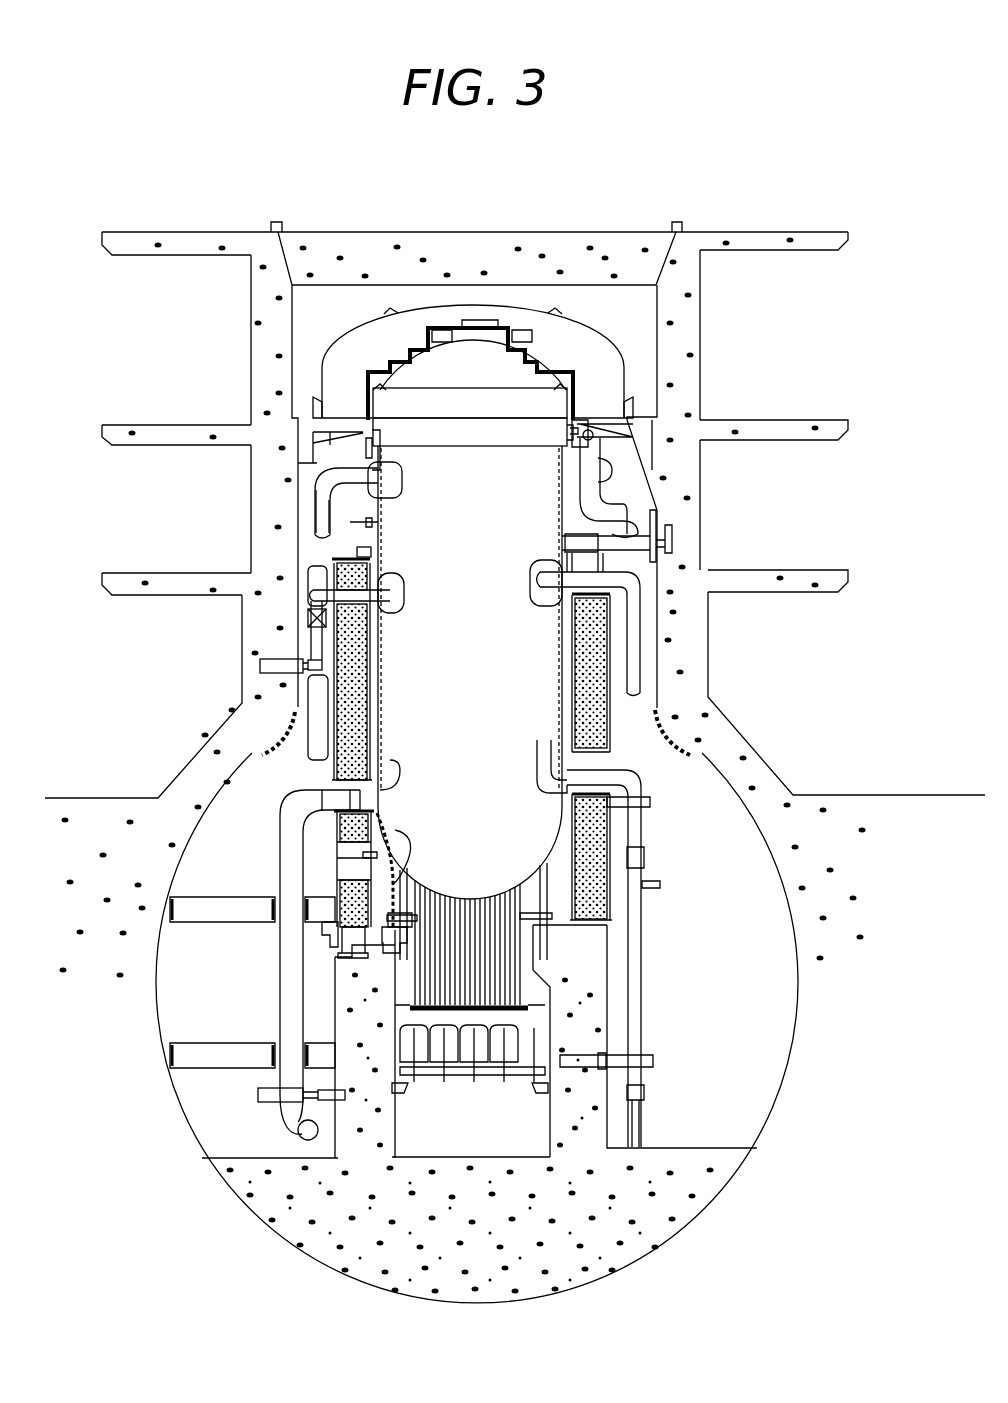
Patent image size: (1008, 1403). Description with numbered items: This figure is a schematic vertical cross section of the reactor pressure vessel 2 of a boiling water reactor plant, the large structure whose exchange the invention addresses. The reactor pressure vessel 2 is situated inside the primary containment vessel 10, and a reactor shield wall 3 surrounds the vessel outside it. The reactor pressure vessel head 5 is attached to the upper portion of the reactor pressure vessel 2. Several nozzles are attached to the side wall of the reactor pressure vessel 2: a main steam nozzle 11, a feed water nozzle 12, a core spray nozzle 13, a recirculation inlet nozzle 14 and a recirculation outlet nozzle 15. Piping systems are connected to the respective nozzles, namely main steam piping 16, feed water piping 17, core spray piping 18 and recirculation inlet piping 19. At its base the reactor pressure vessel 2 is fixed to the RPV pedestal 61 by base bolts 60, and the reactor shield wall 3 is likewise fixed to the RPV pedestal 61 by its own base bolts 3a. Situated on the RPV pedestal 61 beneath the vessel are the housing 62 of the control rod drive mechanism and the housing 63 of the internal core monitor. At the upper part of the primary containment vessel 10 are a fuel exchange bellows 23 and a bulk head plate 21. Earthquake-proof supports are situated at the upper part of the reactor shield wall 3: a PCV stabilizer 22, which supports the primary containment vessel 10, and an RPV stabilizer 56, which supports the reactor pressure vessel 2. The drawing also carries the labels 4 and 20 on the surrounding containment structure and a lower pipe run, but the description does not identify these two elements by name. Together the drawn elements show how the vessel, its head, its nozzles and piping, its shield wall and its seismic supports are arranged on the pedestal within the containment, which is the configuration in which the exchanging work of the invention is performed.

The reactor pressure vessel 2 is at (565, 642).
The reactor shield wall 3 is at (610, 662).
The base bolts 3a is at (337, 933).
The reactor cavity shield dome 4 is at (405, 312).
The reactor pressure vessel head 5 is at (520, 345).
The primary containment vessel 10 is at (762, 836).
The main steam nozzle 11 is at (315, 466).
The feed water nozzle 12 is at (633, 541).
The core spray nozzle 13 is at (330, 582).
The recirculation inlet nozzle 14 is at (660, 742).
The recirculation outlet nozzle 15 is at (370, 775).
The main steam piping 16 is at (302, 498).
The feed water piping 17 is at (637, 583).
The core spray piping 18 is at (310, 607).
The recirculation inlet piping 19 is at (645, 779).
The main pipe 20 is at (357, 802).
The bulk head plate 21 is at (580, 430).
The PCV stabilizer 22 is at (667, 530).
The fuel exchange bellows 23 is at (575, 420).
The RPV stabilizer 56 is at (353, 553).
The base bolts 60 is at (377, 945).
The RPV pedestal 61 is at (607, 1028).
The housing of control rod drive mechanism 62 is at (523, 992).
The housing of internal core monitor 63 is at (488, 968).